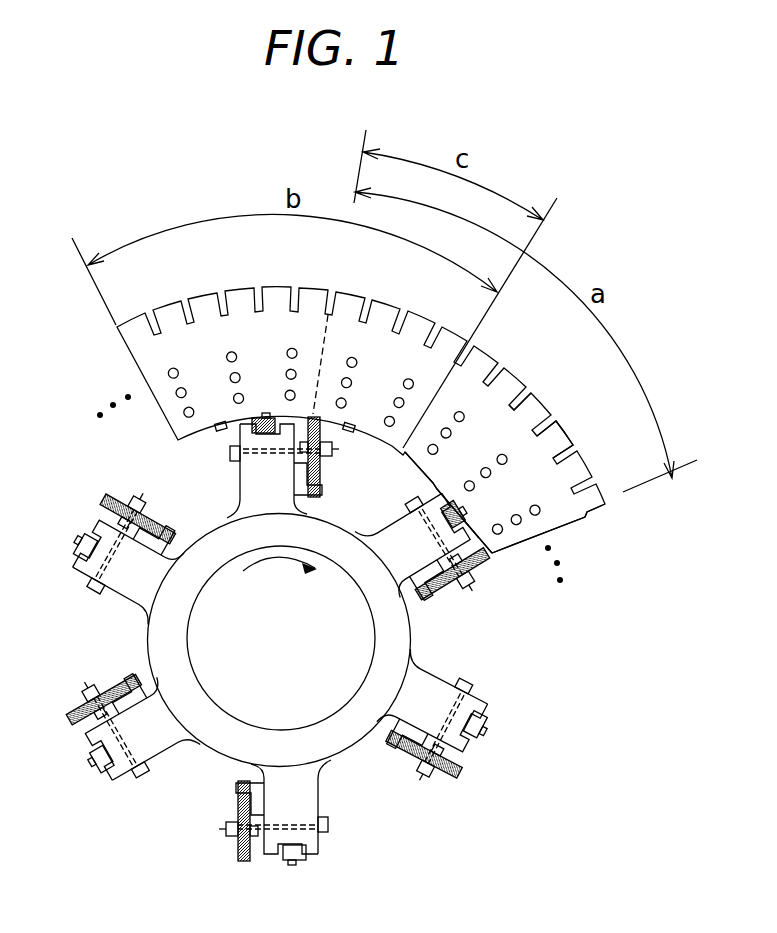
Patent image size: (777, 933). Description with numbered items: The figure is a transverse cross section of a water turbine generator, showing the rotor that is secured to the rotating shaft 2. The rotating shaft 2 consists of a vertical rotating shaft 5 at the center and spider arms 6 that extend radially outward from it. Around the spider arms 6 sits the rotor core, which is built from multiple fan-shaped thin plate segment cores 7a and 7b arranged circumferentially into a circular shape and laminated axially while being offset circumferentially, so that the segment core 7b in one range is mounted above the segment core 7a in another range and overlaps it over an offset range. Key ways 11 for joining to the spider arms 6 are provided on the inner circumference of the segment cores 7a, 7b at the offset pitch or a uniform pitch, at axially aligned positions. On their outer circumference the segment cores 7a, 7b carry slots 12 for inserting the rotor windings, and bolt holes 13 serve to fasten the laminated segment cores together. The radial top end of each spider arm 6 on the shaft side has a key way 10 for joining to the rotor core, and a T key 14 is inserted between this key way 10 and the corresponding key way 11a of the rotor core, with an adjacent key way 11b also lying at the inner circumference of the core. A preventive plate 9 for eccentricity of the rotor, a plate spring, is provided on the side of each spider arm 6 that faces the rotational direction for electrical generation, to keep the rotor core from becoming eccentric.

The rotating shaft 2 is at (271, 690).
The vertical rotating shaft 5 is at (393, 613).
The spider arm 6 is at (415, 553).
The segment core 7a is at (480, 393).
The segment core 7b is at (212, 328).
The preventive plate for eccentricity of rotor 9 is at (487, 567).
The key way 10 is at (475, 732).
The key way 11 is at (436, 486).
The key way 11a is at (476, 514).
The stator end face 11b is at (495, 548).
The slot 12 is at (522, 407).
The bolt hole 13 is at (533, 454).
The T key 14 is at (423, 515).